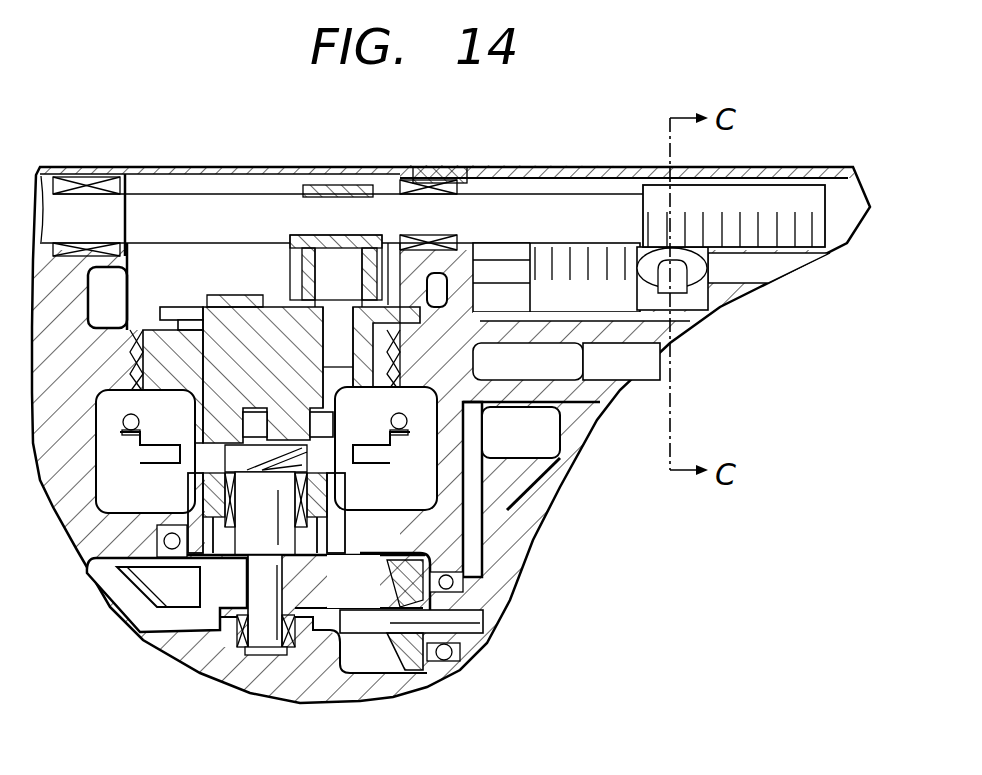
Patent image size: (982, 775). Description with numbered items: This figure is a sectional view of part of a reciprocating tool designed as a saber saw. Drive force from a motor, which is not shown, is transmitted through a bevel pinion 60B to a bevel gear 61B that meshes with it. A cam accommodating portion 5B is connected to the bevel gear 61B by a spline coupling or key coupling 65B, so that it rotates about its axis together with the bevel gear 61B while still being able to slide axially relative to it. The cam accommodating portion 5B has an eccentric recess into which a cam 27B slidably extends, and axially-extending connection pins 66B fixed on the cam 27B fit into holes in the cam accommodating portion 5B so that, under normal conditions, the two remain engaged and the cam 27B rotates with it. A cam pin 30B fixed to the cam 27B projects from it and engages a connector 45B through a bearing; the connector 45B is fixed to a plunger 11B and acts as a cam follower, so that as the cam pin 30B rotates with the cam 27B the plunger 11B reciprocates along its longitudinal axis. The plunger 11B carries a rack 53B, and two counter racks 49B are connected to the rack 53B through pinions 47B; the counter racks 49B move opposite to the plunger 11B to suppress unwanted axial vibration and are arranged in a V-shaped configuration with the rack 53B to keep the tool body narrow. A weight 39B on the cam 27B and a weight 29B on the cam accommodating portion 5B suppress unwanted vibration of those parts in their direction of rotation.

The plunger 11B is at (235, 213).
The connector 45B is at (357, 238).
The rack 53B is at (713, 200).
The weight 39B is at (238, 300).
The cam 27B is at (270, 330).
The cam pin 30B is at (343, 270).
The cam accommodating portion 5B is at (174, 340).
The pinion 47B is at (700, 272).
The counter rack 49B is at (718, 308).
The weight 29B is at (155, 457).
The connection pin 66B is at (330, 443).
The bevel gear 61B is at (185, 598).
The spline coupling or key coupling 65B is at (217, 545).
The bevel pinion 60B is at (440, 670).